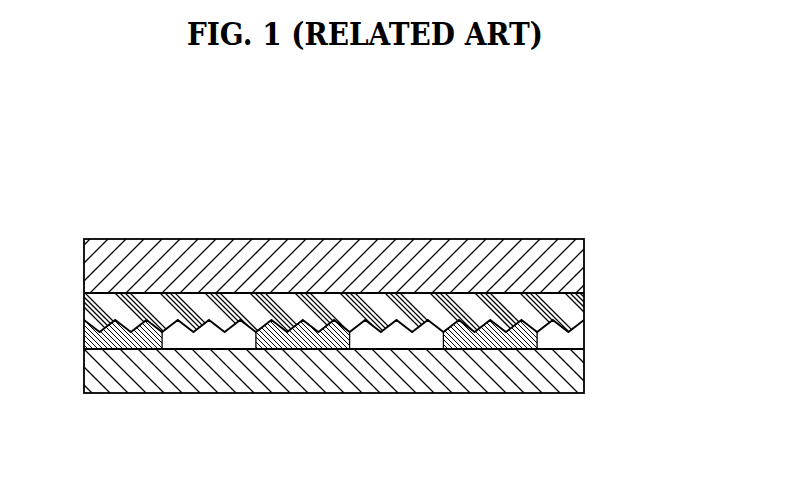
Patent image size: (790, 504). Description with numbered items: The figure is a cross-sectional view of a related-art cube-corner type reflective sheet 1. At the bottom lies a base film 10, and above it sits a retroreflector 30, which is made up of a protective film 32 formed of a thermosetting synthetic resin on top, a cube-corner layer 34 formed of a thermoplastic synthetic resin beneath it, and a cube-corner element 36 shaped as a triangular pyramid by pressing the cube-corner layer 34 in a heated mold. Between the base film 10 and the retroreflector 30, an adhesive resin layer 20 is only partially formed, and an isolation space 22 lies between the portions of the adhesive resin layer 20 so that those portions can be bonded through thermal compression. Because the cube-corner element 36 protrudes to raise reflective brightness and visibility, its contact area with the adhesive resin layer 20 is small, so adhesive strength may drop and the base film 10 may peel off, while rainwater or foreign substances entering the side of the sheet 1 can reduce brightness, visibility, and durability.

The cube-corner type reflective sheet 1 is at (328, 118).
The base film 10 is at (577, 368).
The adhesive resin layer 20 is at (134, 337).
The isolation space 22 is at (390, 337).
The retroreflector 30 is at (213, 192).
The protective film 32 is at (358, 272).
The cube-corner layer 34 is at (287, 303).
The cube-corner element 36 is at (192, 328).